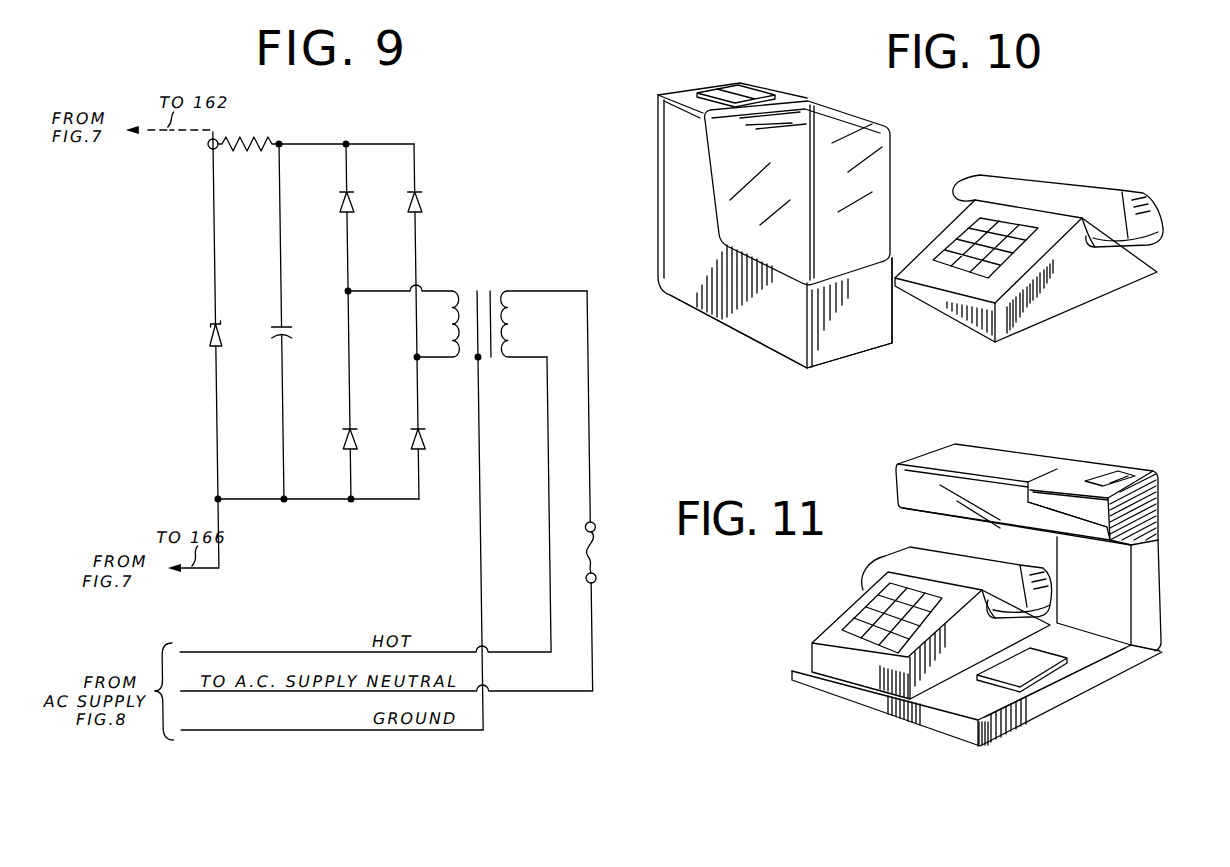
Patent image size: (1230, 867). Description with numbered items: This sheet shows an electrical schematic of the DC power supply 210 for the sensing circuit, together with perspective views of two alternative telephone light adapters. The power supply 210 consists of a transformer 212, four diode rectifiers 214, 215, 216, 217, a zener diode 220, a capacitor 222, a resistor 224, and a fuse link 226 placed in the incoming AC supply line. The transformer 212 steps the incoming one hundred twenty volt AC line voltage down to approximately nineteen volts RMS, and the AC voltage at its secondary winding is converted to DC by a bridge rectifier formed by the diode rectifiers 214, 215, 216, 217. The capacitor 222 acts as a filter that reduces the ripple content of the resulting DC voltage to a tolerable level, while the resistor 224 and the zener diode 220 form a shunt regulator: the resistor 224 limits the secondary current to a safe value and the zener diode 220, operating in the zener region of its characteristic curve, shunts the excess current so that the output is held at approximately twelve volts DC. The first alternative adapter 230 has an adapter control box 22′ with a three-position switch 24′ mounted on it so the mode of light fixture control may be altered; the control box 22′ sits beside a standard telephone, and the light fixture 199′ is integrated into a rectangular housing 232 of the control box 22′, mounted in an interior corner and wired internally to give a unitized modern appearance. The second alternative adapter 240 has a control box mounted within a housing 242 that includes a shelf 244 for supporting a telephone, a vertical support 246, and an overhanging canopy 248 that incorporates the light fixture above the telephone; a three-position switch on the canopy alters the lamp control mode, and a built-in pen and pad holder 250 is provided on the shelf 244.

In FIG. 9, the DC power supply 210 is at (458, 146).
In FIG. 9, the transformer 212 is at (492, 288).
In FIG. 9, the diode rectifier 214 is at (343, 212).
In FIG. 9, the diode rectifier 215 is at (424, 197).
In FIG. 9, the diode rectifier 216 is at (340, 440).
In FIG. 9, the diode rectifier 217 is at (418, 450).
In FIG. 9, the zener diode 220 is at (204, 324).
In FIG. 9, the capacitor 222 is at (281, 326).
In FIG. 9, the resistor 224 is at (253, 141).
In FIG. 9, the fuse link 226 is at (591, 569).
In FIG. 10, the adapter control box 22′ is at (780, 206).
In FIG. 10, the three-position switch 24′ is at (745, 88).
In FIG. 10, the light fixture 199′ is at (886, 152).
In FIG. 10, the telephone light adapter 230 is at (1043, 124).
In FIG. 10, the housing 232 is at (766, 330).
In FIG. 11, the telephone light adapter 240 is at (884, 639).
In FIG. 11, the housing 242 is at (1060, 697).
In FIG. 11, the shelf 244 is at (855, 688).
In FIG. 11, the vertical support 246 is at (1145, 572).
In FIG. 11, the overhanging canopy 248 is at (1060, 480).
In FIG. 11, the pen and pad holder 250 is at (985, 676).